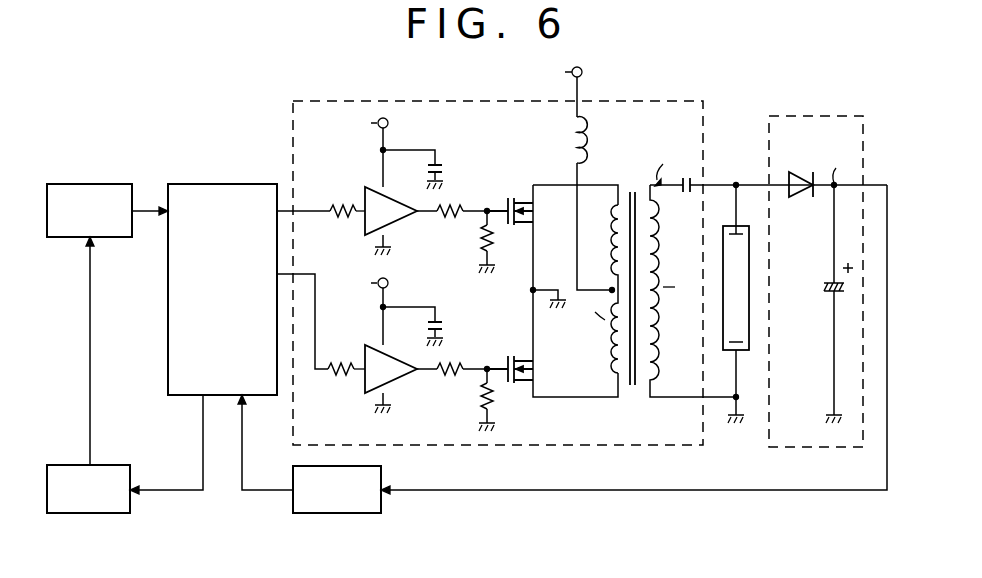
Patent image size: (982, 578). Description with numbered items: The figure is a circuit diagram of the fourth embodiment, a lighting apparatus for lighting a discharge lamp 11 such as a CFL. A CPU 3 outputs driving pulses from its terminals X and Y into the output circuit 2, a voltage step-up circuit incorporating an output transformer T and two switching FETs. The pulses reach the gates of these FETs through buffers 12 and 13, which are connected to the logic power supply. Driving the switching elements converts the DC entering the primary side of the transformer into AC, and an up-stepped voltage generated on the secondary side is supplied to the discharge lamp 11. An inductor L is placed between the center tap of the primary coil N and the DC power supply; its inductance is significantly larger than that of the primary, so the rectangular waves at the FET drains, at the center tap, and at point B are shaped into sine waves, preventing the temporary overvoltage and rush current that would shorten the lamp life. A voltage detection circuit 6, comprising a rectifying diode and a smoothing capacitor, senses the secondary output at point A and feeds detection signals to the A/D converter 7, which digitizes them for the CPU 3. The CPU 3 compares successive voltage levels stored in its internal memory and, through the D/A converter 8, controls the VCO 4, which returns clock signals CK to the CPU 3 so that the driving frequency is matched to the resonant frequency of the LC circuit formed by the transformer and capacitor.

The output circuit 2 is at (350, 101).
The CPU 3 is at (223, 184).
The VCO 4 is at (103, 184).
The voltage detection circuit 6 is at (800, 116).
The A/D converter 7 is at (382, 503).
The D/A converter 8 is at (114, 465).
The discharge lamp 11 is at (737, 352).
The buffer 12 is at (365, 188).
The buffer 13 is at (365, 346).